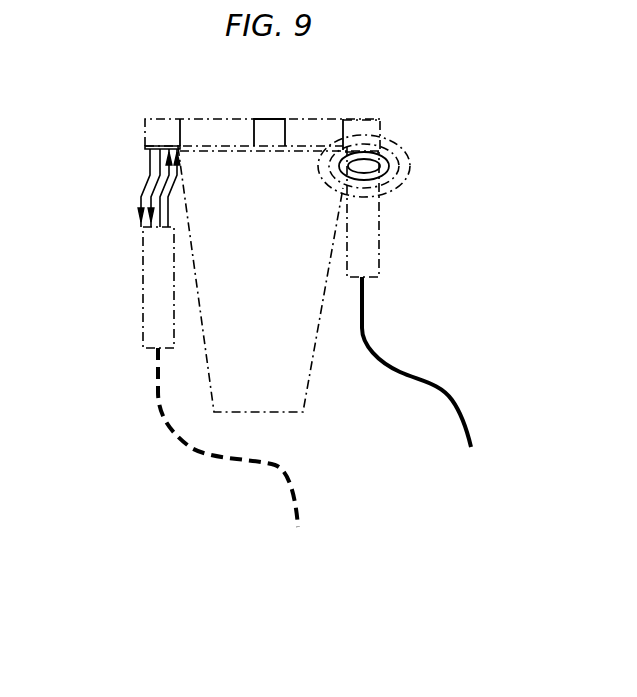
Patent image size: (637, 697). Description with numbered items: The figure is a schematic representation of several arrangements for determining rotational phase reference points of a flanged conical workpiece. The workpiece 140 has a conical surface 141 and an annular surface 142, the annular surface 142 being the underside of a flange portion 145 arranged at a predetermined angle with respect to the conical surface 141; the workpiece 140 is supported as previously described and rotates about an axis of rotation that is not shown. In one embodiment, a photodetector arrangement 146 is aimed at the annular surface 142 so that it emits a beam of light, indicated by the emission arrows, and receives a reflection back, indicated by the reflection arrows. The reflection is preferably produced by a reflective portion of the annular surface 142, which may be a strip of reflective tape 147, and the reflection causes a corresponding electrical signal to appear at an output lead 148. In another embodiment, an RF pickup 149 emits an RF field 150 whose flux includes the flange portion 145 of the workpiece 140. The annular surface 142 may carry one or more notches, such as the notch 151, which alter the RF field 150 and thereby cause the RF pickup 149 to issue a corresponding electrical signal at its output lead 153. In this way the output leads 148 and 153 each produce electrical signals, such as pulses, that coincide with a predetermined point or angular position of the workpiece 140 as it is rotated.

The workpiece 140 is at (313, 120).
The conical surface 141 is at (300, 383).
The annular surface 142 is at (240, 147).
The flange portion 145 is at (368, 120).
The photodetector arrangement 146 is at (152, 284).
The strip of reflective tape 147 is at (148, 147).
The output lead 148 is at (212, 453).
The RF pickup 149 is at (365, 223).
The RF field 150 is at (400, 150).
The notch 151 is at (267, 127).
The output lead 153 is at (418, 372).